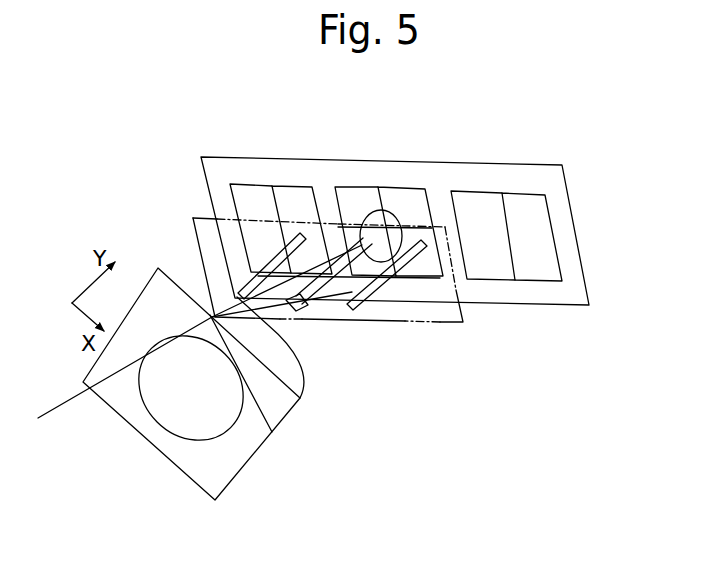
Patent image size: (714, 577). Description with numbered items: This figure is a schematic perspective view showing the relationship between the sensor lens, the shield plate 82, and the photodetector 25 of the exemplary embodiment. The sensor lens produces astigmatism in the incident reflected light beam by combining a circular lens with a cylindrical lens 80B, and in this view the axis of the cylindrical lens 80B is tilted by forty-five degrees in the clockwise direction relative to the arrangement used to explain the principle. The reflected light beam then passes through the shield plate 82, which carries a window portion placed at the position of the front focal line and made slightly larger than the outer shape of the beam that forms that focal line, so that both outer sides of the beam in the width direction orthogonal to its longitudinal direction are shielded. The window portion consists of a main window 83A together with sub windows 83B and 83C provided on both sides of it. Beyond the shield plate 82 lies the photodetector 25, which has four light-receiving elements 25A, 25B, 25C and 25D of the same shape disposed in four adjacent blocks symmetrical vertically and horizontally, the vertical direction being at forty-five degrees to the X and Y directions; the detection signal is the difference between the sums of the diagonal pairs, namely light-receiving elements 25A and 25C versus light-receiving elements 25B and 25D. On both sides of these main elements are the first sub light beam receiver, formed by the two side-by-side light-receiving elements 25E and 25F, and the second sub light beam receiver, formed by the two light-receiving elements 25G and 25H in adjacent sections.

The photodetector 25 is at (482, 156).
The light-receiving element 25A is at (360, 197).
The light-receiving element 25B is at (409, 198).
The light-receiving element 25C is at (441, 282).
The light-receiving element 25D is at (357, 241).
The light-receiving element 25E is at (247, 205).
The light-receiving element 25F is at (295, 196).
The light-receiving element 25G is at (478, 203).
The light-receiving element 25H is at (527, 215).
The shield plate 82 is at (447, 329).
The main window 83A is at (310, 304).
The sub window 83B is at (237, 295).
The sub window 83C is at (365, 304).
The cylindrical lens 80B is at (272, 430).